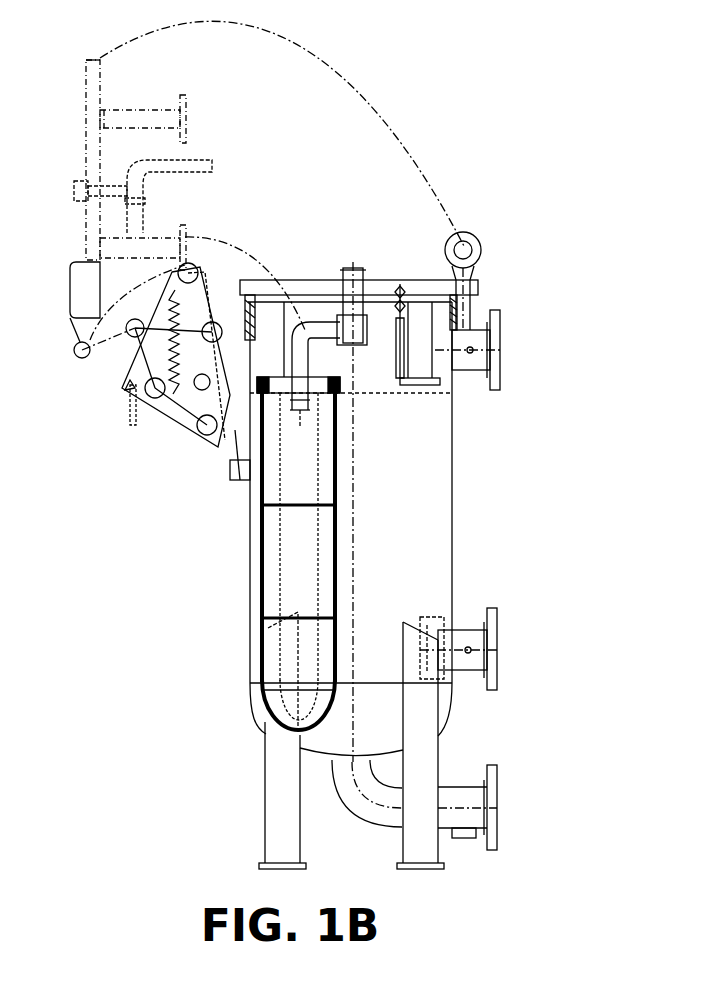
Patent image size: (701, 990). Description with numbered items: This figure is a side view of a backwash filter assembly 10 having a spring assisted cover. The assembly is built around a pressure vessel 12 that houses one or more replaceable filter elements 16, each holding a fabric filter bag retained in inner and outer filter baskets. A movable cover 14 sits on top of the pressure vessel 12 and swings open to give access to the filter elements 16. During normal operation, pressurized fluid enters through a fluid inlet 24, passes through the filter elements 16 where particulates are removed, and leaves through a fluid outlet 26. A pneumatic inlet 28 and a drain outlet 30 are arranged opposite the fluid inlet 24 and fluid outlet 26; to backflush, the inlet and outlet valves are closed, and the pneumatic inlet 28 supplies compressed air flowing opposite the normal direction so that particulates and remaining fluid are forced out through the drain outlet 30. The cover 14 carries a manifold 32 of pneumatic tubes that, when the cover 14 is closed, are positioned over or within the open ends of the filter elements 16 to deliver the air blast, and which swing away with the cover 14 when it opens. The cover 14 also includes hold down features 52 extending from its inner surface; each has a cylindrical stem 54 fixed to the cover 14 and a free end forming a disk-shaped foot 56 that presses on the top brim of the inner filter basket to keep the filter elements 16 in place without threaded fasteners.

The backwash filter assembly 10 is at (497, 479).
The pressure vessel 12 is at (428, 573).
The cover 14 is at (478, 290).
The filter element 16 is at (275, 572).
The fluid inlet 24 is at (498, 660).
The fluid outlet 26 is at (500, 368).
The pneumatic inlet 28 is at (352, 268).
The drain outlet 30 is at (498, 820).
The manifold 32 is at (323, 322).
The hold down feature 52 is at (96, 120).
The stem 54 is at (112, 110).
The foot 56 is at (190, 124).